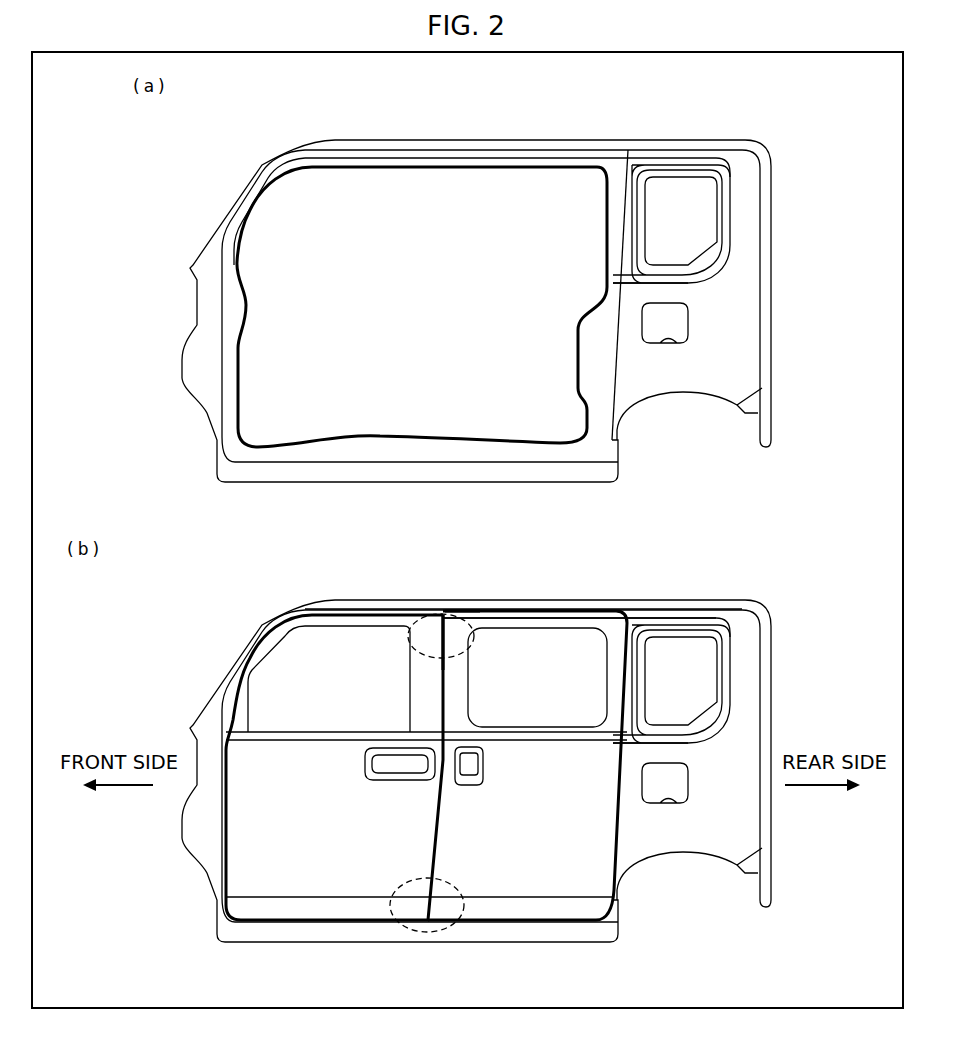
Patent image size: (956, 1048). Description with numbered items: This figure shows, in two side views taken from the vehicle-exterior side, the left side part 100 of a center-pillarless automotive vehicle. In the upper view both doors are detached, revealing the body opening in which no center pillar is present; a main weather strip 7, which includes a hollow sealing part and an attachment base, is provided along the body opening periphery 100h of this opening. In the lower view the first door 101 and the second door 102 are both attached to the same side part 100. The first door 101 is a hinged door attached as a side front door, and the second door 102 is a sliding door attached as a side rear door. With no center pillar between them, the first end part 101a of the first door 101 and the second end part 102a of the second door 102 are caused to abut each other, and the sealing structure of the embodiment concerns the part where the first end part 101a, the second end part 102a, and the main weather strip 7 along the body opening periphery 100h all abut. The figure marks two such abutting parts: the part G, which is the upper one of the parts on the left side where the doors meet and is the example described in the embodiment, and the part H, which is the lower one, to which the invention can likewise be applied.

The side part 100 is at (716, 140).
The body opening periphery 100h is at (436, 272).
The main weather strip 7 is at (600, 163).
The first door 101 is at (323, 780).
The second door 102 is at (528, 780).
The first end part 101a is at (432, 622).
The second end part 102a is at (470, 618).
The part G is at (463, 617).
The part H is at (410, 939).